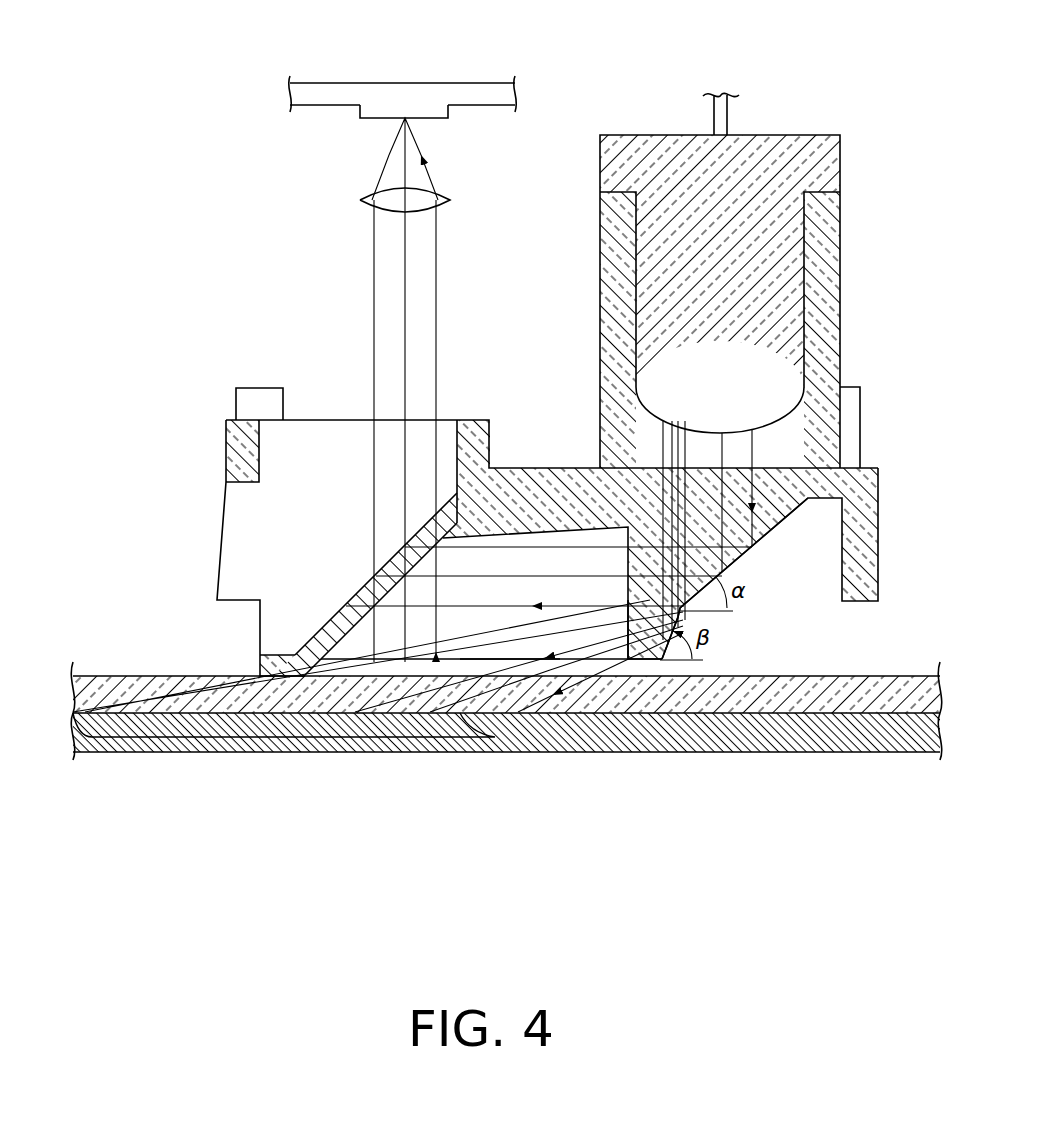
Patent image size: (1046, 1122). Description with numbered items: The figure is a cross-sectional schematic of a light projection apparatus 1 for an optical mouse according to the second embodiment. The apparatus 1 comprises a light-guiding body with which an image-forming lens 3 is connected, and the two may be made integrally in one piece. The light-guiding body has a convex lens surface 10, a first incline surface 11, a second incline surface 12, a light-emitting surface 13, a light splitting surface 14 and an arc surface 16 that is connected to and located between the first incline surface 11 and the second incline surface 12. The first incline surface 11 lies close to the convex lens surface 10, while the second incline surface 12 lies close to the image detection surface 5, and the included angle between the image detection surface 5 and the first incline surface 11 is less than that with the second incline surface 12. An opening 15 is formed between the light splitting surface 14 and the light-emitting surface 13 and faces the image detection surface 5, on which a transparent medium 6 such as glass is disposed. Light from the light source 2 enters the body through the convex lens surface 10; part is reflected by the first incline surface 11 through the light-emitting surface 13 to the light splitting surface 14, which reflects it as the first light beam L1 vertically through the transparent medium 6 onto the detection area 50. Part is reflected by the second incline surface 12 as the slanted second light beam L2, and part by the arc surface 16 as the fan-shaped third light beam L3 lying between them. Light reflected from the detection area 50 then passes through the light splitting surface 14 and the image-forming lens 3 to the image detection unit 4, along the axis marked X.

The light projection apparatus 1 is at (733, 477).
The light source 2 is at (765, 250).
The image-forming lens 3 is at (372, 200).
The image detection unit 4 is at (380, 113).
The image detection surface 5 is at (230, 717).
The transparent medium 6 is at (173, 700).
The convex lens surface 10 is at (748, 445).
The first incline surface 11 is at (740, 560).
The second incline surface 12 is at (690, 642).
The light-emitting surface 13 is at (640, 600).
The light splitting surface 14 is at (343, 660).
The opening 15 is at (513, 657).
The arc surface 16 is at (678, 617).
The detection area 50 is at (293, 737).
The first light beam L1 is at (407, 630).
The second light beam L2 is at (545, 648).
The third light beam L3 is at (545, 640).
The optical axis X is at (405, 322).